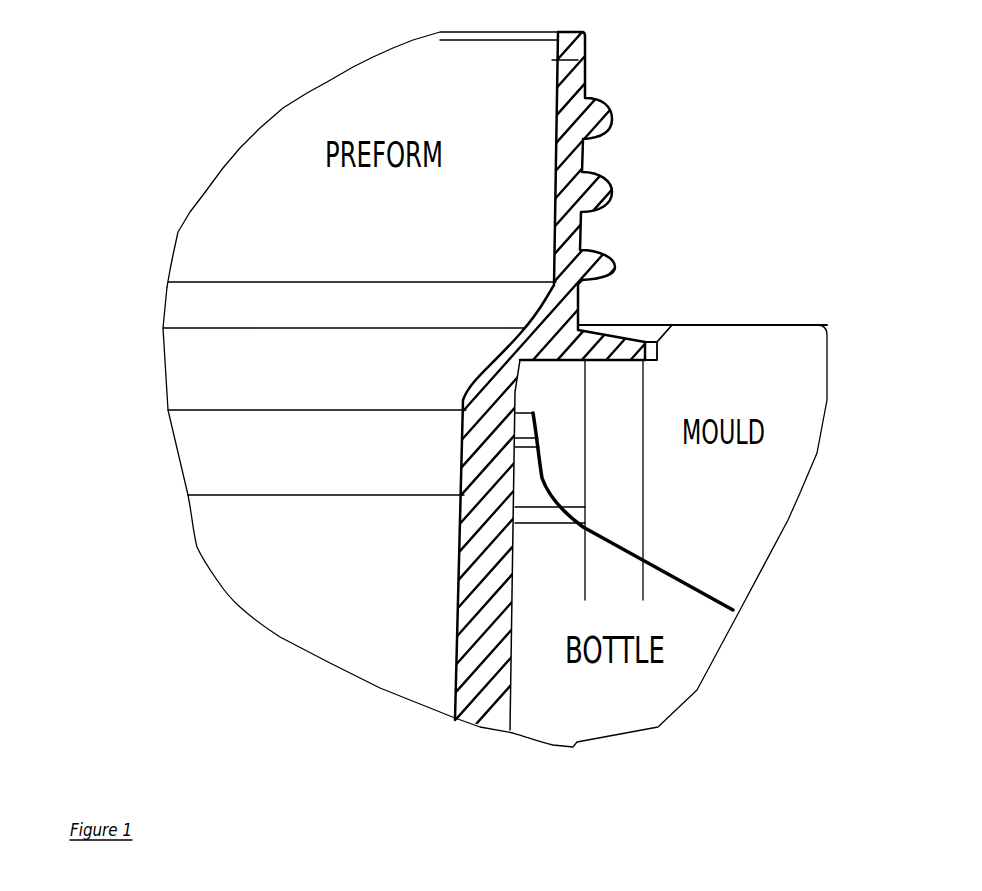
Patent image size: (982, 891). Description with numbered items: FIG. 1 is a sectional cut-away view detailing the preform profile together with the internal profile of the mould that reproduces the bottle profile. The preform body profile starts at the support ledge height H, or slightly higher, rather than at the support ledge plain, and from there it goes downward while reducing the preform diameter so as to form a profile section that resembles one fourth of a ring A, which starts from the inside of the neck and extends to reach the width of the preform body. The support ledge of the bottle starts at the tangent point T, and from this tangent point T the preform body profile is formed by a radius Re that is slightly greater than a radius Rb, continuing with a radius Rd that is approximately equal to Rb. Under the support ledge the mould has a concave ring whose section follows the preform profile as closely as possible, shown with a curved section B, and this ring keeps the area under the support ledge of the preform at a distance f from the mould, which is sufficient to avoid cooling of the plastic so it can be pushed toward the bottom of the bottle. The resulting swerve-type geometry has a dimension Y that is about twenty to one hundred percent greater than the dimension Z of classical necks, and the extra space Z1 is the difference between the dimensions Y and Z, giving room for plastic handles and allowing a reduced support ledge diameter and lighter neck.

The profile section that resembles one fourth of a ring A is at (497, 377).
The curved section B is at (543, 404).
The radius Rb is at (490, 373).
The radius Rd is at (522, 393).
The radius Re is at (533, 375).
The tangent point T is at (560, 346).
The support ledge height H is at (678, 382).
The dimension y Y is at (644, 507).
The extra space z1 Z1 is at (584, 565).
The dimension z Z is at (642, 565).
The distance f is at (487, 471).